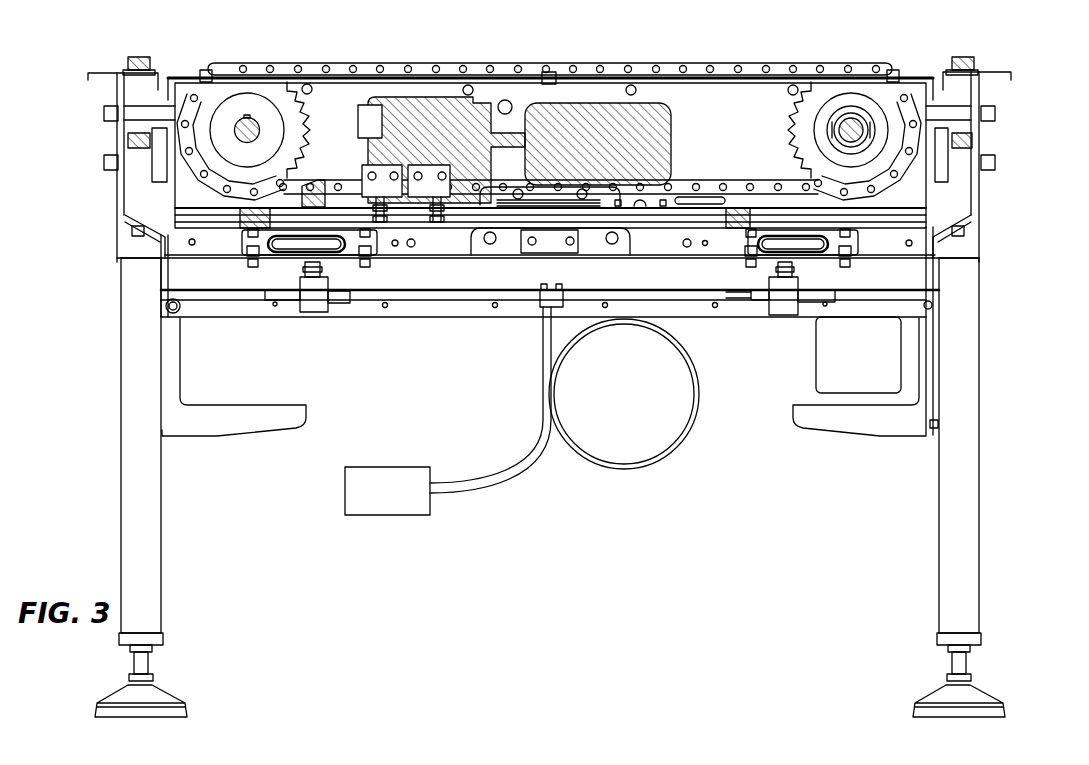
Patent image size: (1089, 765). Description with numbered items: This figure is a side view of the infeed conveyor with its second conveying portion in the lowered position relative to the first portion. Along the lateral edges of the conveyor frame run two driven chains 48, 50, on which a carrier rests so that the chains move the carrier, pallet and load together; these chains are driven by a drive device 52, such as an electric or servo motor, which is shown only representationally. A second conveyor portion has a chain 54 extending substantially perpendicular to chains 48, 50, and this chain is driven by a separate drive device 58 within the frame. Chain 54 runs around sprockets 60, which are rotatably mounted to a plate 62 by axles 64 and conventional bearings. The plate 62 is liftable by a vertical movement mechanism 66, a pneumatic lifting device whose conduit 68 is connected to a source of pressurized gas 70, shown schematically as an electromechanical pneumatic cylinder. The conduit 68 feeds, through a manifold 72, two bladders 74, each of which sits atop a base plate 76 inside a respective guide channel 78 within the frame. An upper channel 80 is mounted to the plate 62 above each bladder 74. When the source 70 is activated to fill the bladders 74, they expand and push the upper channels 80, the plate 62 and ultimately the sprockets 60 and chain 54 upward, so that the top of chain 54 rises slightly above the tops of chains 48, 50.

The driven chain 48 is at (971, 140).
The driven chain 50 is at (127, 143).
The drive device 52 is at (906, 367).
The chain 54 is at (530, 63).
The drive device 58 is at (670, 116).
The sprocket 60 is at (803, 135).
The plate 62 is at (247, 208).
The axle 64 is at (250, 124).
The vertical movement mechanism 66 is at (523, 336).
The conduit 68 is at (548, 352).
The source of pressurized gas 70 is at (440, 465).
The manifold 72 is at (363, 302).
The bladder 74 is at (280, 256).
The base plate 76 is at (426, 258).
The guide channel 78 is at (364, 258).
The upper channel 80 is at (366, 233).